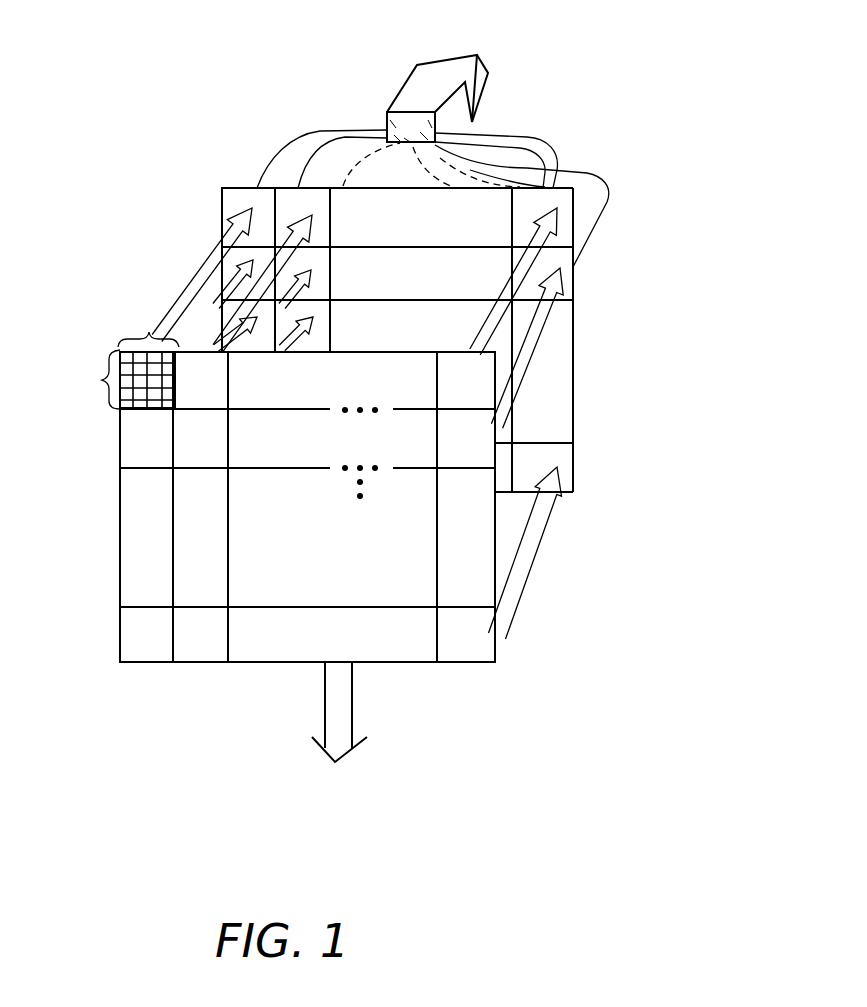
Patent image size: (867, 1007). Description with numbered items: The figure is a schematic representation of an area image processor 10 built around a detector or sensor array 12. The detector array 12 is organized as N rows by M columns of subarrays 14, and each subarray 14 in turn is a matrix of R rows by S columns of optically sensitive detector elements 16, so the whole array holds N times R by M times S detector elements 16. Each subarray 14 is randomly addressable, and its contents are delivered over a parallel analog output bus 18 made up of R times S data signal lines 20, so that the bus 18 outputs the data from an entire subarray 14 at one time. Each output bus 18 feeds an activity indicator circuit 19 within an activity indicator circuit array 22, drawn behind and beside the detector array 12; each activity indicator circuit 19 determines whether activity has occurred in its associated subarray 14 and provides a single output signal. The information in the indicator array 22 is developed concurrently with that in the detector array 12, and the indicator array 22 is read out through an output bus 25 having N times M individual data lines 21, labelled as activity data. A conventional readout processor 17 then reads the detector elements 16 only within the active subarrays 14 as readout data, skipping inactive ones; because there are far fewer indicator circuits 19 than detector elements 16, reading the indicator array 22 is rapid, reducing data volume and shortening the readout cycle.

The area image processor 10 is at (168, 767).
The detector array 12 is at (417, 652).
The subarray 14 is at (127, 663).
The detector element 16 is at (147, 409).
The readout processor 17 is at (325, 712).
The parallel analog output bus 18 is at (184, 288).
The activity indicator circuit 19 is at (222, 190).
The data signal line 20 is at (209, 263).
The individual data line 21 is at (530, 137).
The activity indicator circuit array 22 is at (600, 413).
The output bus 25 is at (400, 104).